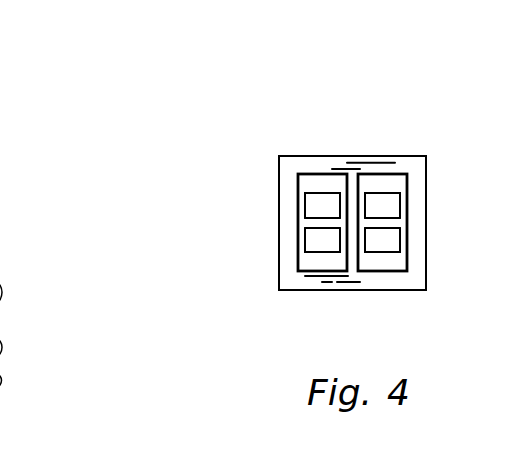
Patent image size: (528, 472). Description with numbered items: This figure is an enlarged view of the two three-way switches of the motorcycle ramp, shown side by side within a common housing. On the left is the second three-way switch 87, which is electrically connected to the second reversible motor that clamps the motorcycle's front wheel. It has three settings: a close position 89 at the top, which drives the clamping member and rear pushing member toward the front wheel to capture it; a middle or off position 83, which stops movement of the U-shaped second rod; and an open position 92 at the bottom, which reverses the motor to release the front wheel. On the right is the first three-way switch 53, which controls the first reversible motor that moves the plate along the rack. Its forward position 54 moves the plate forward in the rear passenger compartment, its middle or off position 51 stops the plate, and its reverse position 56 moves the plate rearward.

The second three-way switch 87 is at (323, 178).
The first three-way switch 53 is at (382, 178).
The close position 89 is at (308, 207).
The middle or off position 83 is at (307, 223).
The open position 92 is at (307, 242).
The forward position 54 is at (393, 202).
The middle or off position 51 is at (393, 222).
The reverse position 56 is at (395, 240).